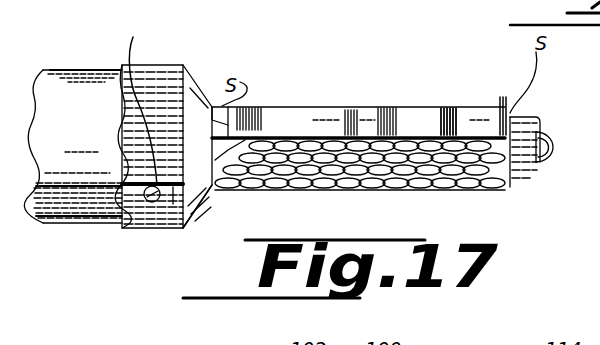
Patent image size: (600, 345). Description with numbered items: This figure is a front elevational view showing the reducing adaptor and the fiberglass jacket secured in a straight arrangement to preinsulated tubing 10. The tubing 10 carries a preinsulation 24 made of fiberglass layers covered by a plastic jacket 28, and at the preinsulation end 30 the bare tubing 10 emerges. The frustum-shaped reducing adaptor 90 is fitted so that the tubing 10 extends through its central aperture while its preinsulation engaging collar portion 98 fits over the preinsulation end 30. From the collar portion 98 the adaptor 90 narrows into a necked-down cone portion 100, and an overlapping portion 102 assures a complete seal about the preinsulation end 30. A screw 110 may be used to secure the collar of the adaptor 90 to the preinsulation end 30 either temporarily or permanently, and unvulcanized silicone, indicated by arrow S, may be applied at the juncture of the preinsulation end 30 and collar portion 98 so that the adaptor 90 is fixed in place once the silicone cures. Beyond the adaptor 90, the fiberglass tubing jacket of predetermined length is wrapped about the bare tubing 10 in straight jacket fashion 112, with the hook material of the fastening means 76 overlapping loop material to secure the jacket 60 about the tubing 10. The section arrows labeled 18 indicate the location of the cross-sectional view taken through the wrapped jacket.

The preinsulated tubing 10 is at (530, 163).
The section line 18 is at (320, 72).
The preinsulation 24 is at (58, 69).
The plastic jacket 28 is at (104, 68).
The preinsulation end 30 is at (100, 218).
The jacket 60 is at (478, 110).
The fastening means 76 is at (297, 122).
The frustum-shaped reducing adaptor 90 is at (200, 86).
The collar portion 98 is at (147, 65).
The cone portion 100 is at (192, 200).
The overlapping portion 102 is at (150, 204).
The screw 110 is at (140, 100).
The straight jacket fashion 112 is at (458, 100).